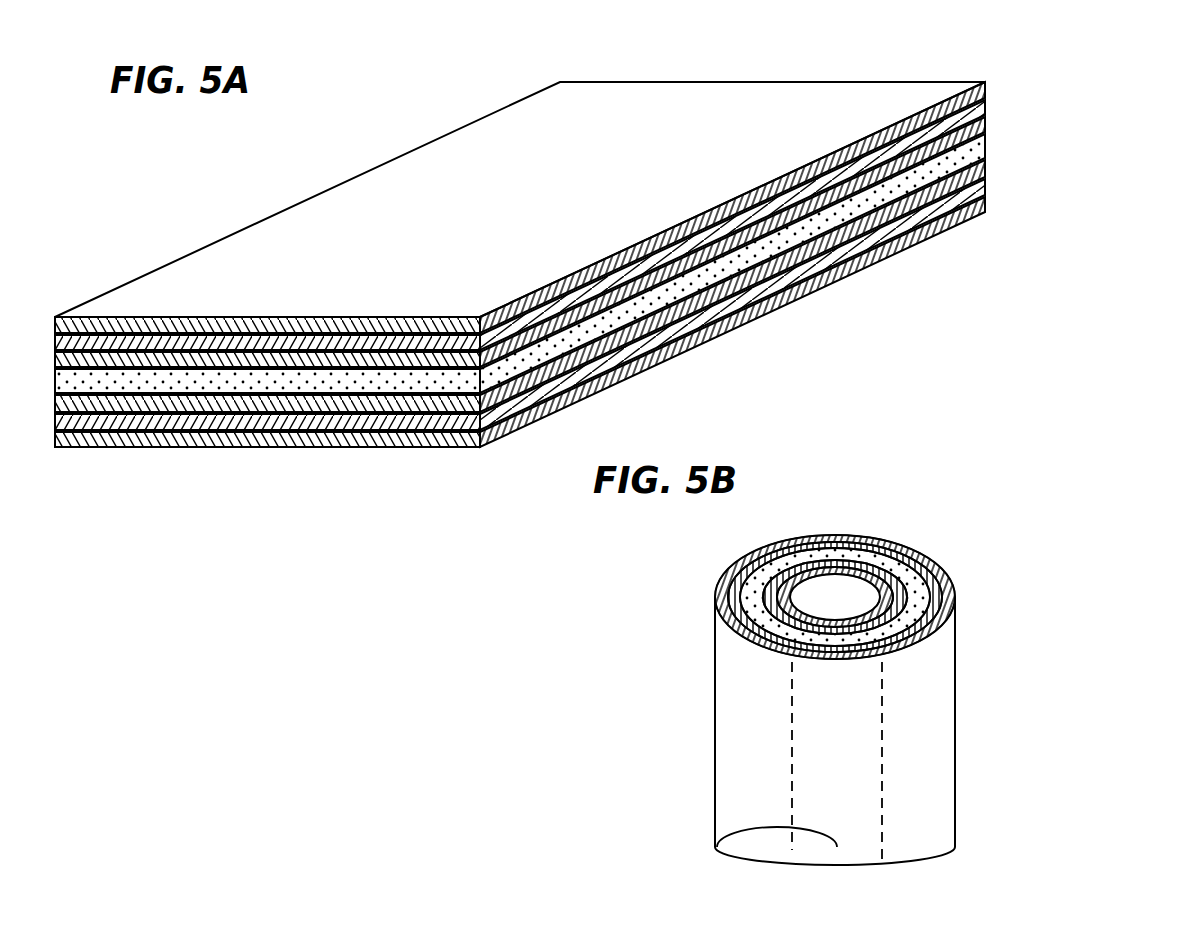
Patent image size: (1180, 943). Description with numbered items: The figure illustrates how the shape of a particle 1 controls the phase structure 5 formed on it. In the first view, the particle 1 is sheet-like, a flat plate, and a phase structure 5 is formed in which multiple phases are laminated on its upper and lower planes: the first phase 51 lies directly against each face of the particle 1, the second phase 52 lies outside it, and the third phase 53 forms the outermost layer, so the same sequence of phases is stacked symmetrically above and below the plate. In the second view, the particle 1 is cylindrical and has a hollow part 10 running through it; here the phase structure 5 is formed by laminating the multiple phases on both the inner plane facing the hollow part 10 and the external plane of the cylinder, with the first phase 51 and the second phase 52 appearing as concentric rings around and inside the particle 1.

In FIG. 5A, the particle 1 is at (972, 152).
In FIG. 5B, the particle 1 is at (917, 552).
In FIG. 5A, the phase structure 5 is at (860, 344).
In FIG. 5B, the phase structure 5 is at (893, 435).
In FIG. 5B, the hollow part 10 is at (855, 608).
In FIG. 5A, the first phase 51 is at (990, 119).
In FIG. 5B, the first phase 51 is at (873, 545).
In FIG. 5A, the second phase 52 is at (990, 99).
In FIG. 5B, the second phase 52 is at (830, 543).
In FIG. 5A, the third phase 53 is at (988, 84).